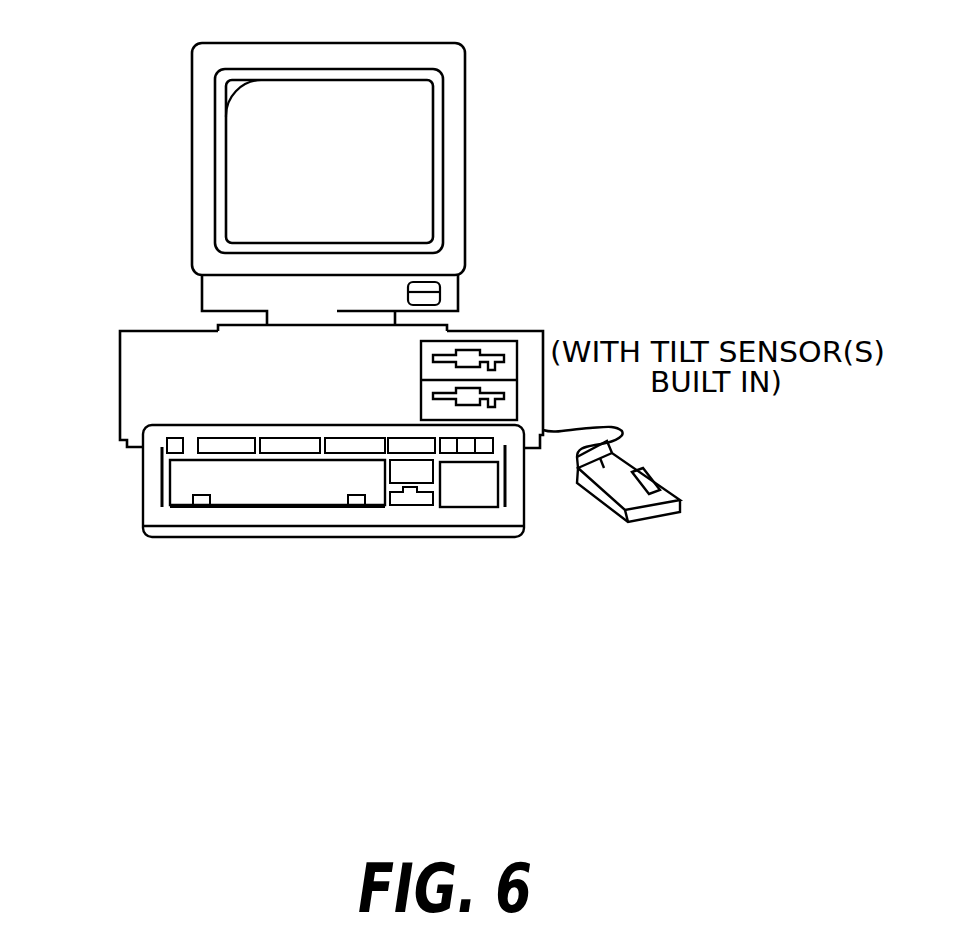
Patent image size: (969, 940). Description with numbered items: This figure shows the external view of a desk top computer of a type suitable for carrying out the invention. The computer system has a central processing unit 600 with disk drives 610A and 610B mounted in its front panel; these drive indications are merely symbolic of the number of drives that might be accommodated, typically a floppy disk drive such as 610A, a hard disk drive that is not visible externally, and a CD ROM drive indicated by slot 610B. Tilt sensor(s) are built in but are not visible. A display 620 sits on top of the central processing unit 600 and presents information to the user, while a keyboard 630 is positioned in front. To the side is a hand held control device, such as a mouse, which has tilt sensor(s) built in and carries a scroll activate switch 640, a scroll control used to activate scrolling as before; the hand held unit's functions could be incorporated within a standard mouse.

The central processing unit 600 is at (148, 328).
The disk drive 610A is at (421, 360).
The disk drive 610B is at (421, 398).
The display 620 is at (466, 118).
The keyboard 630 is at (143, 483).
The scroll activate switch 640 is at (648, 472).